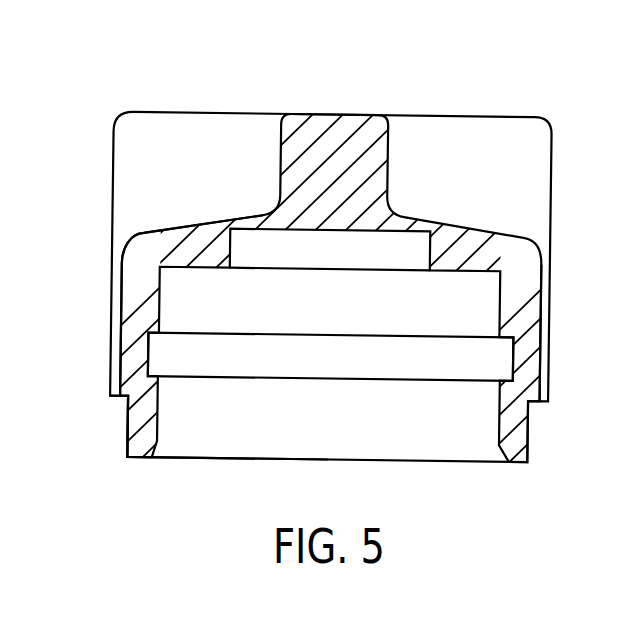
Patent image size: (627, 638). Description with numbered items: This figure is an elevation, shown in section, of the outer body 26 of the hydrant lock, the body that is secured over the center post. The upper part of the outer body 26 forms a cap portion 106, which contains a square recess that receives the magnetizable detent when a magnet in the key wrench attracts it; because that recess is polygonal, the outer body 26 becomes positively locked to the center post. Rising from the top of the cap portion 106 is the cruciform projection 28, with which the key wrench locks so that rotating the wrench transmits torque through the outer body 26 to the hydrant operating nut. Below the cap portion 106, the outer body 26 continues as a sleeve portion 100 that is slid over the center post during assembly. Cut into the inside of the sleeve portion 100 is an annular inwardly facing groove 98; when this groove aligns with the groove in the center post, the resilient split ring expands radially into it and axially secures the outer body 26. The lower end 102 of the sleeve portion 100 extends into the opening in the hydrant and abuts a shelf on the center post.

The outer body 26 is at (567, 216).
The cruciform projection 28 is at (493, 130).
The annular inwardly facing groove 98 is at (508, 352).
The sleeve portion 100 is at (120, 348).
The lower end 102 is at (128, 420).
The cap portion 106 is at (200, 224).